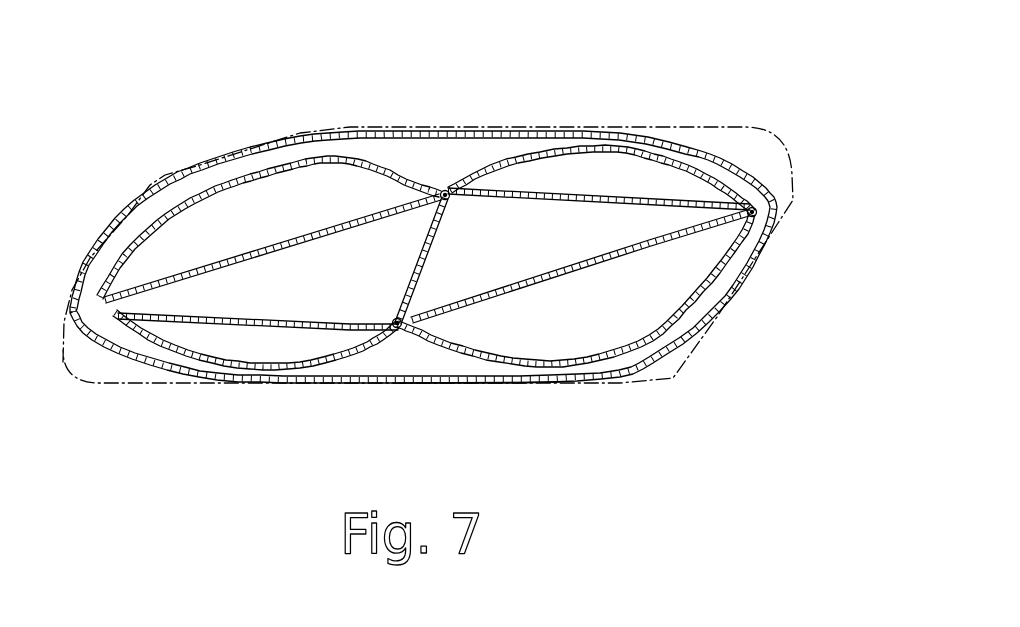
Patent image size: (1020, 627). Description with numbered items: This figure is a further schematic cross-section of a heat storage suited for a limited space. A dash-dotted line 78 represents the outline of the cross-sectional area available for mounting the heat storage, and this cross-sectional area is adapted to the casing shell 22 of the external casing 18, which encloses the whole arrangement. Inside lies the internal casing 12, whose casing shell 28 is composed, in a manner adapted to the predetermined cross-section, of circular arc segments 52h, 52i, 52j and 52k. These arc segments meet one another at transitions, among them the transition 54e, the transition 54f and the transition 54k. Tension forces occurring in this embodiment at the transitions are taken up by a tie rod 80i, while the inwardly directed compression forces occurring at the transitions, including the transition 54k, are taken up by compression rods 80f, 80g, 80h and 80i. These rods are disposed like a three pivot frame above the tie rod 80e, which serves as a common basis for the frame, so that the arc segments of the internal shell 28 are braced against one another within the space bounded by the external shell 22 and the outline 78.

The internal casing 12 is at (485, 254).
The external casing 18 is at (486, 257).
The casing shell 22 is at (763, 188).
The casing shell 28 is at (481, 372).
The circular arc segment 52h is at (365, 160).
The circular arc segment 52i is at (643, 149).
The circular arc segment 52j is at (620, 365).
The circular arc segment 52k is at (345, 352).
The transition 54e is at (453, 187).
The transition 54f is at (399, 330).
The transition 54k is at (758, 215).
The dash-dotted line 78 is at (763, 140).
The tie rod 80e is at (428, 253).
The compression rod 80f is at (550, 194).
The compression rod 80g is at (685, 240).
The compression rod 80h is at (205, 320).
The tie rod 80i is at (290, 243).